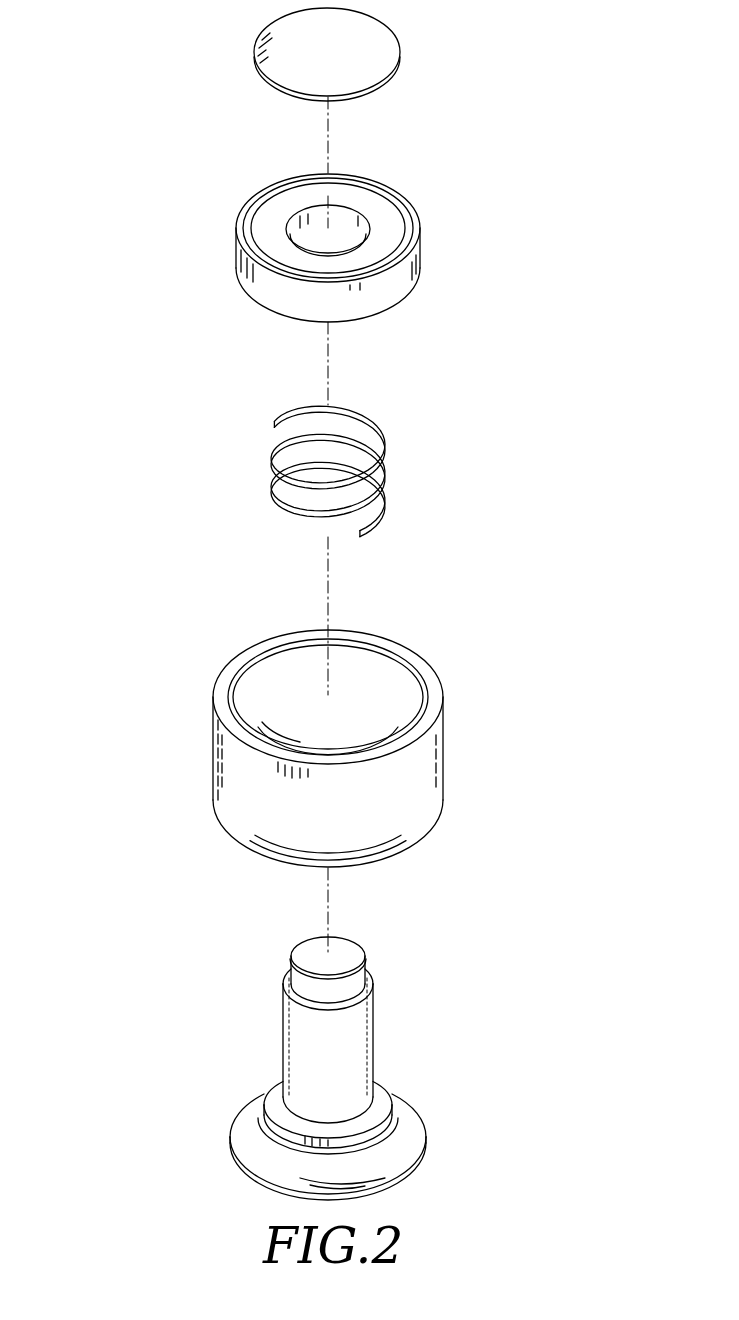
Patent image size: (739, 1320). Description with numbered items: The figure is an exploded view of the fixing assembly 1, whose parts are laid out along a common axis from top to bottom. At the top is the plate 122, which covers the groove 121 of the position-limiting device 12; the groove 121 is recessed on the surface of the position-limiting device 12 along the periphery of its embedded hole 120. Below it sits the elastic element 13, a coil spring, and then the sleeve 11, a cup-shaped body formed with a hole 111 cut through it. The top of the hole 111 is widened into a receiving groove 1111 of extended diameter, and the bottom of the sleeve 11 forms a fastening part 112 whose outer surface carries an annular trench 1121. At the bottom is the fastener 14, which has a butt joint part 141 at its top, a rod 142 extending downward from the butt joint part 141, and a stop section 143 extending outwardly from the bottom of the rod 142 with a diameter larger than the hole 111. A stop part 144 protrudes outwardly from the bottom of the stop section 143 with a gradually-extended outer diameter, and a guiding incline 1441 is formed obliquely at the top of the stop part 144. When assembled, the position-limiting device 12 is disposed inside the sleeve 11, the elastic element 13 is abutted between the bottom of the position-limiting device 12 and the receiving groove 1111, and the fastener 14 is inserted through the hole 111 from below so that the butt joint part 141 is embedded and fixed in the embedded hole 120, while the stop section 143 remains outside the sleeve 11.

The fixing assembly 1 is at (563, 52).
The sleeve 11 is at (285, 762).
The hole 111 is at (360, 728).
The receiving groove 1111 is at (268, 678).
The fastening part 112 is at (233, 865).
The annular trench 1121 is at (292, 858).
The position-limiting device 12 is at (343, 236).
The embedded hole 120 is at (308, 212).
The groove 121 is at (385, 218).
The plate 122 is at (385, 43).
The elastic element 13 is at (375, 487).
The fastener 14 is at (286, 1074).
The butt joint part 141 is at (345, 988).
The rod 142 is at (348, 1026).
The stop section 143 is at (277, 1096).
The stop part 144 is at (234, 1152).
The guiding incline 1441 is at (280, 1167).